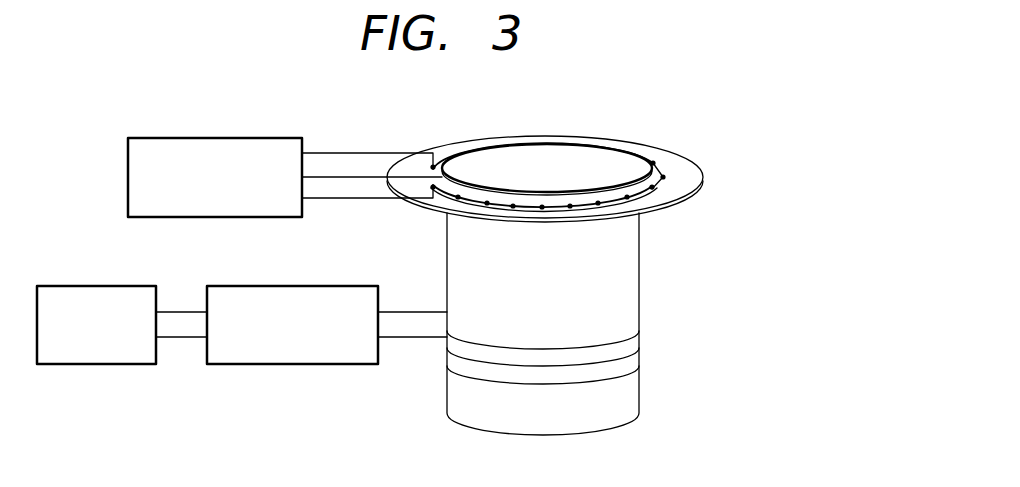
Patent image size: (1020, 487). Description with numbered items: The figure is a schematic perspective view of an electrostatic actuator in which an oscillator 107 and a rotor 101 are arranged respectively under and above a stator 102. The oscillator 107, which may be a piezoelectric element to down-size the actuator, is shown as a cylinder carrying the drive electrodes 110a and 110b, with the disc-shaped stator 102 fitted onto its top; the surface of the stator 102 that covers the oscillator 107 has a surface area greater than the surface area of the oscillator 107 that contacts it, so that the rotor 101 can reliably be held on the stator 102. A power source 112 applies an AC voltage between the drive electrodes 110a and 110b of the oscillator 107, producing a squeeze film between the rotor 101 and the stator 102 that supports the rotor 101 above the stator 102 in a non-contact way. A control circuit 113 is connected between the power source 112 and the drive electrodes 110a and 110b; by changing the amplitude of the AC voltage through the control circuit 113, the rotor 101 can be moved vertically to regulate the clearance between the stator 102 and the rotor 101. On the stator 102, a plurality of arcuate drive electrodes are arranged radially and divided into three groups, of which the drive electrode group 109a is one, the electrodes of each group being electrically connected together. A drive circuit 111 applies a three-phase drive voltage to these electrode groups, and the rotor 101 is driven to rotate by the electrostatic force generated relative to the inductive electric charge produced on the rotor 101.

The rotor 101 is at (600, 158).
The stator 102 is at (685, 163).
The oscillator 107 is at (618, 292).
The drive electrode group 109a is at (665, 206).
The drive electrode 110a is at (633, 336).
The drive electrode 110b is at (632, 368).
The drive circuit 111 is at (272, 138).
The power source 112 is at (138, 286).
The control circuit 113 is at (360, 286).